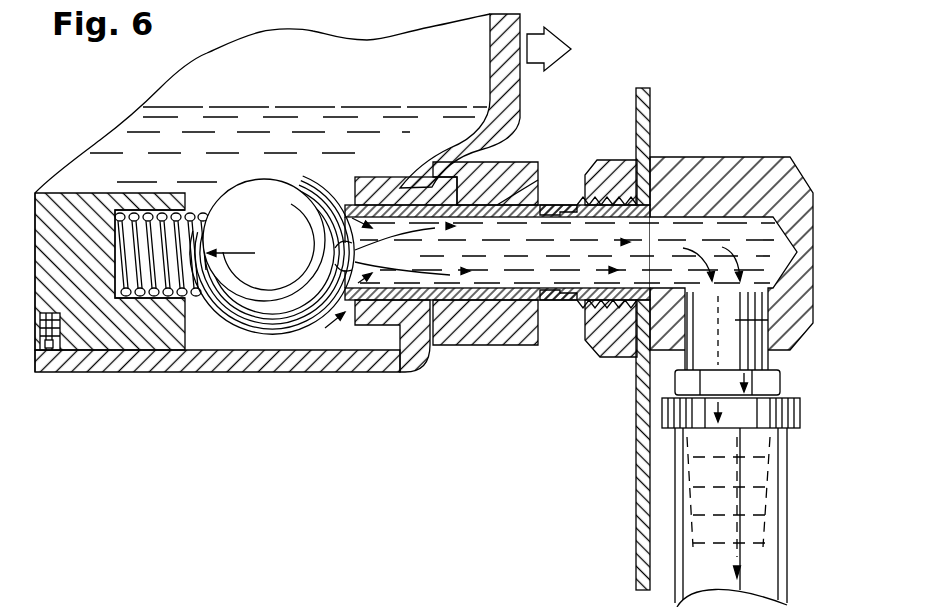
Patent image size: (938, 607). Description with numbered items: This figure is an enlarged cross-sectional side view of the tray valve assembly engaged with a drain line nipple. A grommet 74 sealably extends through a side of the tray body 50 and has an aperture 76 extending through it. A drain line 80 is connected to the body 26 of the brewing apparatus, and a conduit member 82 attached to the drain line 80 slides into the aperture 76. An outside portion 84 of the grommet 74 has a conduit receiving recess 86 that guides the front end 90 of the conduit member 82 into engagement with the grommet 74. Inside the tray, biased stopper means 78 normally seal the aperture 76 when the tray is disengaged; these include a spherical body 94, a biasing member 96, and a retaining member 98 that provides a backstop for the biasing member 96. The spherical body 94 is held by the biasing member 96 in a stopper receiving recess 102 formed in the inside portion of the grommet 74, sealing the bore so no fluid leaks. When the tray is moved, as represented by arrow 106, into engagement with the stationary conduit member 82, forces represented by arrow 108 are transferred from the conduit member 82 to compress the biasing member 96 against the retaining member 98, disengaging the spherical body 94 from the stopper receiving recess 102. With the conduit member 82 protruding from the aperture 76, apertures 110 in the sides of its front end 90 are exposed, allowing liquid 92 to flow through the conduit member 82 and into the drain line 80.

The body 26 is at (645, 438).
The tray body 50 is at (214, 300).
The grommet 74 is at (390, 183).
The aperture 76 is at (445, 343).
The biased stopper means 78 is at (320, 345).
The drain line 80 is at (697, 159).
The conduit member 82 is at (545, 318).
The outside portion 84 is at (525, 166).
The conduit receiving recess 86 is at (560, 200).
The front end 90 is at (313, 180).
The liquid 92 is at (293, 165).
The spherical body 94 is at (264, 312).
The biasing member 96 is at (197, 297).
The retaining member 98 is at (120, 345).
The stopper receiving recess 102 is at (325, 180).
The arrow 106 is at (575, 55).
The arrow 108 is at (243, 255).
The apertures 110 is at (320, 270).